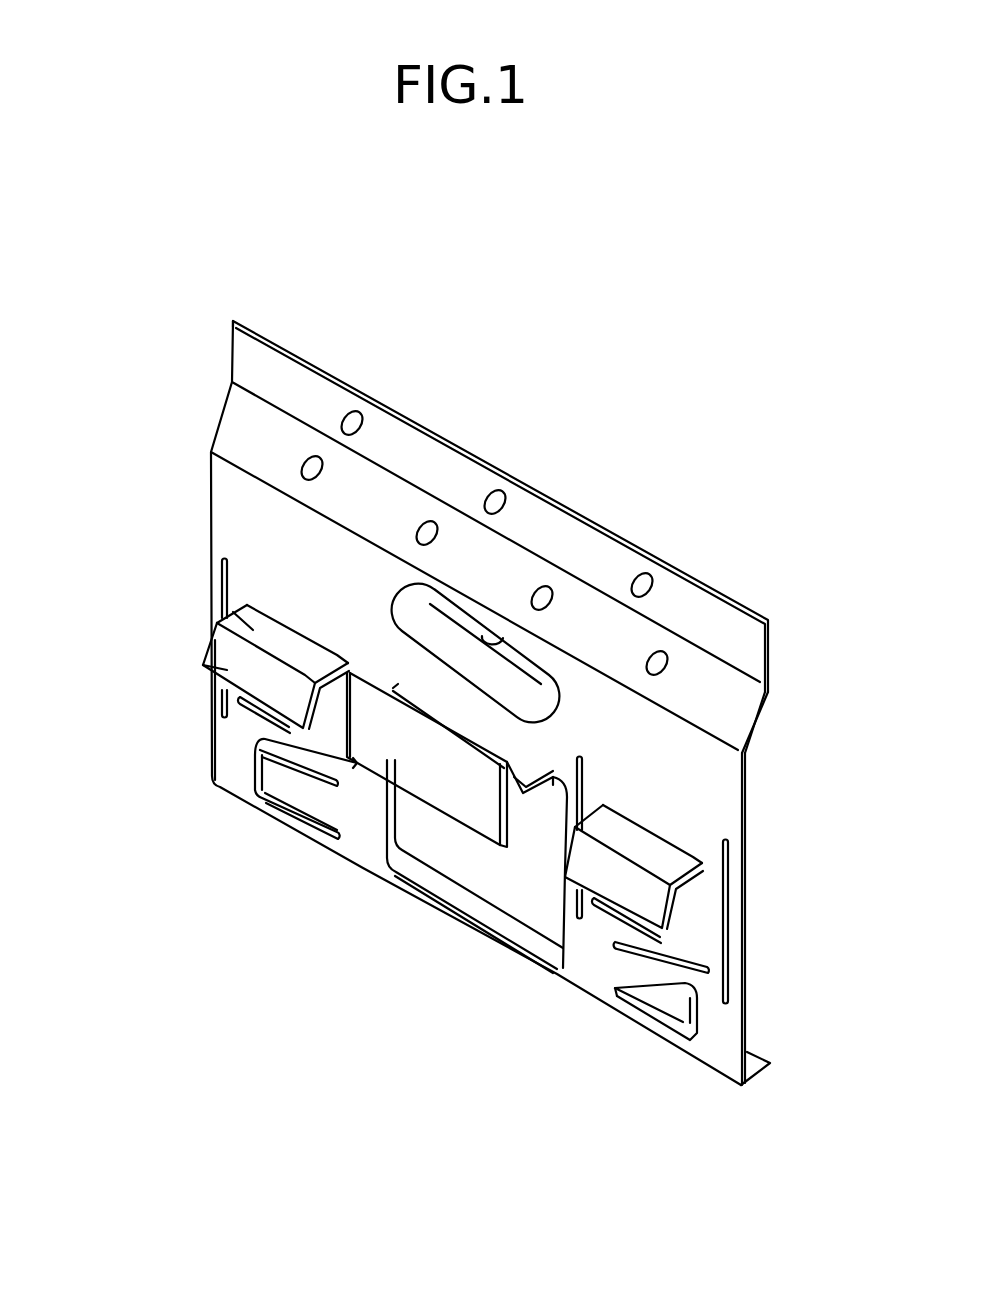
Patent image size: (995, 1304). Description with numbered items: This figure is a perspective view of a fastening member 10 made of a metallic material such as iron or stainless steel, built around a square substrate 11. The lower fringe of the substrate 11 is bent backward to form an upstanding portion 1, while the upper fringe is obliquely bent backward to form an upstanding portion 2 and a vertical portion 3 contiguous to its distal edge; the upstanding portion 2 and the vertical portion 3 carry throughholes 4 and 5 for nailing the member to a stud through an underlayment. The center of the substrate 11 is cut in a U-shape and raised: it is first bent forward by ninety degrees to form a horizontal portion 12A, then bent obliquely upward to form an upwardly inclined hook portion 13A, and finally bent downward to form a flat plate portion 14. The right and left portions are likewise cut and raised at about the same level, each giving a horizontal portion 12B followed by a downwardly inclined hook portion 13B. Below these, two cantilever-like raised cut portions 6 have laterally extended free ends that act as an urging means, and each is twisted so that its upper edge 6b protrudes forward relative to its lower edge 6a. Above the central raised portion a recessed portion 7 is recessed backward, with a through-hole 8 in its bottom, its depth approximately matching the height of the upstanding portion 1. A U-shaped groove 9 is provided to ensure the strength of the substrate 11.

The upstanding portion 1 is at (770, 1064).
The upstanding portion 2 is at (738, 708).
The vertical portion 3 is at (745, 647).
The throughholes 4 is at (428, 520).
The throughholes 5 is at (503, 490).
The raised cut portions 6 is at (300, 795).
The lower edges 6a is at (268, 800).
The upper edges 6b is at (272, 763).
The recessed portion 7 is at (408, 618).
The through-hole 8 is at (497, 632).
The U-shaped groove 9 is at (222, 563).
The bracket 10 is at (765, 387).
The square substrate 11 is at (713, 777).
The horizontal portion 12A is at (530, 773).
The horizontal portion 12B is at (237, 612).
The upwardly inclined hook portion 13A is at (520, 797).
The downwardly inclined hook portion 13B is at (203, 665).
The flat plate portion 14 is at (466, 800).